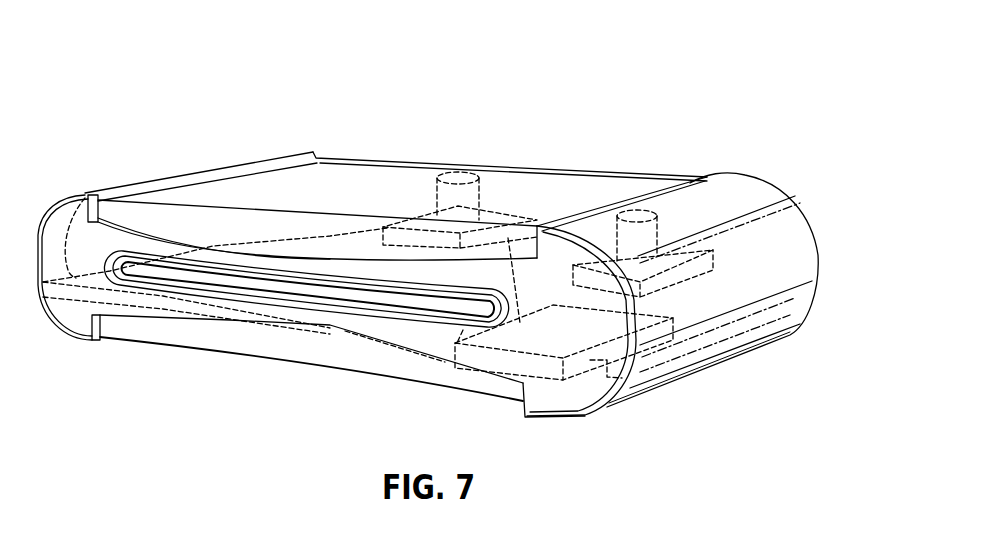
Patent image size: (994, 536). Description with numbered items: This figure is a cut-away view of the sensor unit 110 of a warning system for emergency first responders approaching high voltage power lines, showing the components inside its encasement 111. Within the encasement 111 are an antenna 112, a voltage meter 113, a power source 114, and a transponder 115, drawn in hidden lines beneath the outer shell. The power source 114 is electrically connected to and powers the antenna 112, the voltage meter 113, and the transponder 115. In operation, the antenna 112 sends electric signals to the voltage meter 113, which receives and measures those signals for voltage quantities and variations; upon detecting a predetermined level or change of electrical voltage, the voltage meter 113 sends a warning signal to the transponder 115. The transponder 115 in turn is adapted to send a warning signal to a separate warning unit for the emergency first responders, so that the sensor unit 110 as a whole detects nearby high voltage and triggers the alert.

The sensor unit 110 is at (750, 128).
The encasement 111 is at (788, 180).
The antenna 112 is at (660, 226).
The voltage meter 113 is at (91, 194).
The power source 114 is at (640, 393).
The transponder 115 is at (437, 203).